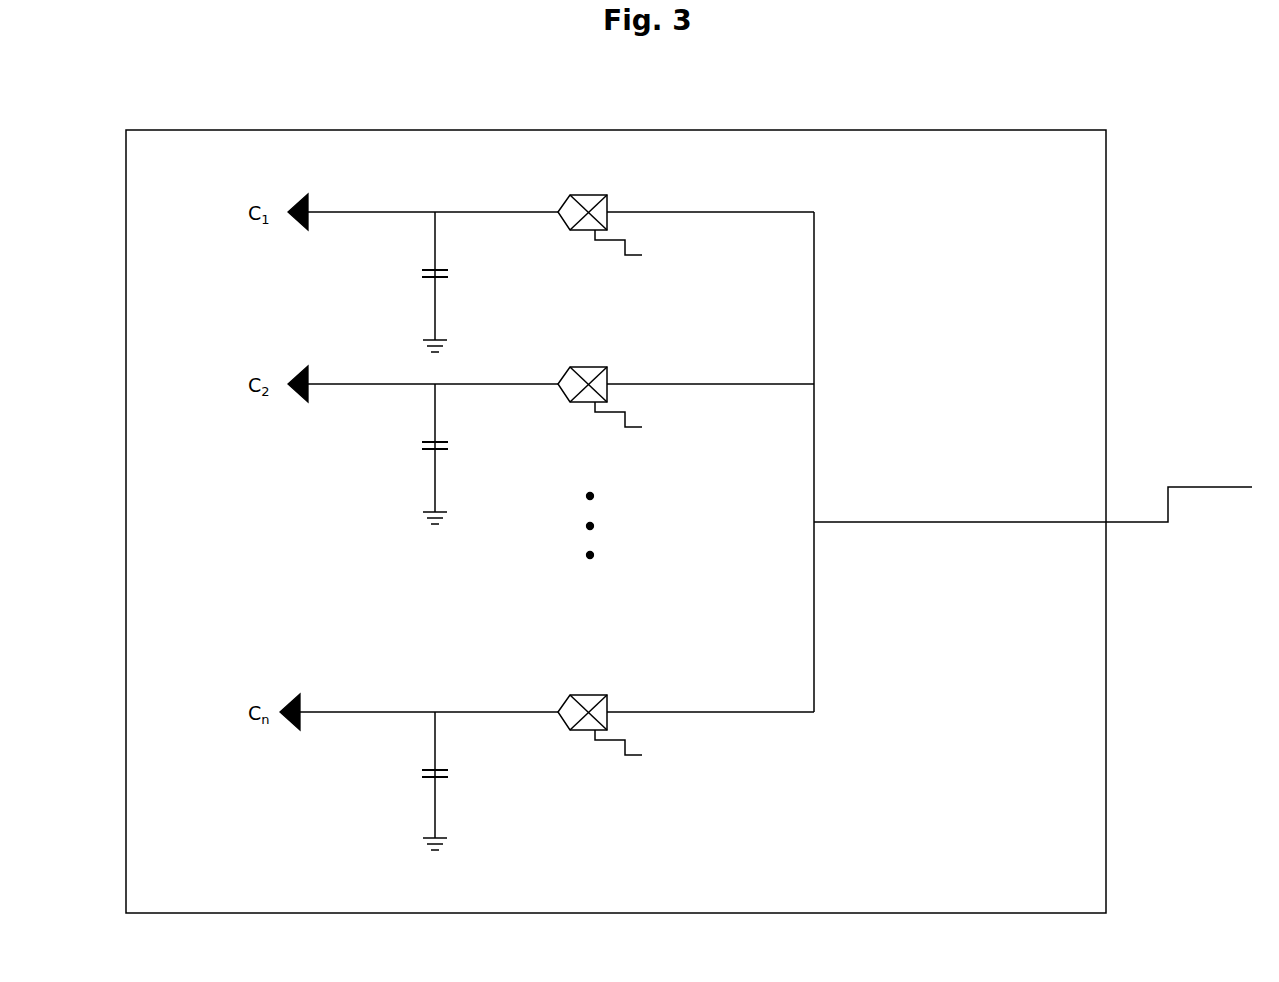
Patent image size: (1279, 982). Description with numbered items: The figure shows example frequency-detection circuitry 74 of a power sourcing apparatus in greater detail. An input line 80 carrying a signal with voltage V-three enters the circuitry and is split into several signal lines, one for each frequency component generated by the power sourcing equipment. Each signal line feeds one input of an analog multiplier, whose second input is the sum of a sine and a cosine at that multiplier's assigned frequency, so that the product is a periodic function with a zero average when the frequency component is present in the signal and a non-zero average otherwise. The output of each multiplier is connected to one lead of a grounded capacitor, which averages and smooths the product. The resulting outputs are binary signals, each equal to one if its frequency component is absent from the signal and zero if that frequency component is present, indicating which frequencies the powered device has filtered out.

The frequency-detection circuitry 74 is at (629, 889).
The input line 80 is at (1188, 487).